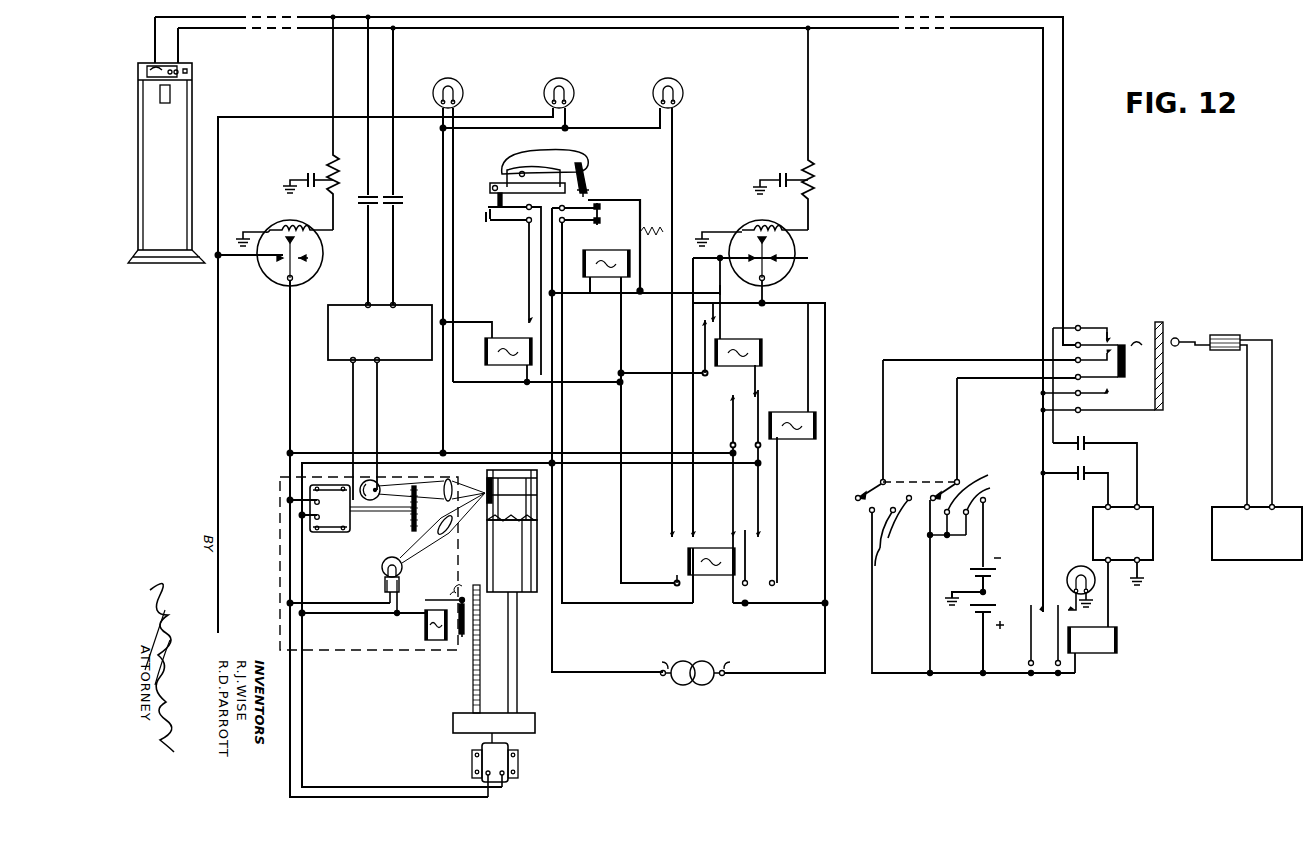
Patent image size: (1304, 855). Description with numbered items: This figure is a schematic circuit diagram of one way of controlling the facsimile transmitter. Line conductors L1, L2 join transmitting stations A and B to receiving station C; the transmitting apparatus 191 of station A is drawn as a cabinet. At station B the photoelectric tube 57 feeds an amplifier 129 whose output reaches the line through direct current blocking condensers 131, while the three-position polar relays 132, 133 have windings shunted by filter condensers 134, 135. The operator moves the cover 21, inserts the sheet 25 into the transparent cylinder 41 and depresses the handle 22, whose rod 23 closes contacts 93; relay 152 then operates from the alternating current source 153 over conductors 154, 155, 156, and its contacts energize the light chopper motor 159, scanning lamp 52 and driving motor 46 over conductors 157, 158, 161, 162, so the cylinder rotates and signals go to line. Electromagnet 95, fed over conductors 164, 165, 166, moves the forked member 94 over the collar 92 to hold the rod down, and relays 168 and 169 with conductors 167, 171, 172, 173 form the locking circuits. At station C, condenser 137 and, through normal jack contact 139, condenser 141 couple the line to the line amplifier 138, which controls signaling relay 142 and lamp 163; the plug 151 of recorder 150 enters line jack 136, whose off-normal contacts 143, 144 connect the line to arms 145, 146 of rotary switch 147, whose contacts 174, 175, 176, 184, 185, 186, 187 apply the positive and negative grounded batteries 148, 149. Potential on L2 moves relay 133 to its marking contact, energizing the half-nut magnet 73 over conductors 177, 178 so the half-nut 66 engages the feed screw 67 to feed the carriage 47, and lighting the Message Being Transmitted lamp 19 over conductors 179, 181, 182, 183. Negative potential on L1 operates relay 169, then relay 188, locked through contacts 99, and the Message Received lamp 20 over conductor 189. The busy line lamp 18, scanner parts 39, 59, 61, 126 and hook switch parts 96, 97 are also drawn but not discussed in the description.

The busy line lamp 18 is at (683, 93).
The Message Being Transmitted lamp 19 is at (574, 93).
The Message Received lamp 20 is at (463, 93).
The cover 21 is at (545, 189).
The handle 22 is at (559, 155).
The rod 23 is at (586, 177).
The subject matter bearing sheet 25 is at (500, 472).
The drum shaft 39 is at (517, 668).
The hollow transparent cylinder 41 is at (487, 552).
The driving motor 46 is at (500, 762).
The carriage 47 is at (365, 652).
The scanning lamp 52 is at (383, 577).
The photoelectric tube 57 is at (369, 502).
The disc shaft 59 is at (383, 513).
The slotted disc 61 is at (410, 522).
The half-nut 66 is at (462, 643).
The feed screw 67 is at (479, 705).
The half-nut magnet 73 is at (430, 641).
The collar 92 is at (588, 197).
The contacts 93 is at (600, 214).
The forked member 94 is at (628, 202).
The electromagnet 95 is at (610, 252).
The hook switch pivot 96 is at (490, 188).
The switch post 97 is at (490, 207).
The contacts 99 is at (488, 218).
The lens 126 is at (522, 476).
The amplifier 129 is at (399, 306).
The direct current blocking condensers 131 is at (388, 203).
The three-position polar relay 132 is at (761, 226).
The three-position polar relay 133 is at (290, 223).
The filter condenser 134 is at (780, 172).
The filter condenser 135 is at (312, 173).
The line jack 136 is at (1137, 325).
The direct current blocking condenser 137 is at (1078, 480).
The line amplifier 138 is at (1145, 512).
The normal jack contact 139 is at (1108, 342).
The direct current blocking condenser 141 is at (1088, 437).
The signaling relay 142 is at (1110, 640).
The off-normal jack contact 143 is at (1108, 387).
The off-normal jack contact 144 is at (1120, 332).
The switch arm 145 is at (953, 484).
The switch arm 146 is at (878, 482).
The manually operable rotary switch 147 is at (920, 472).
The positive grounded battery 148 is at (975, 614).
The negative grounded battery 149 is at (975, 573).
The recorder 150 is at (1278, 510).
The plug 151 is at (1224, 336).
The relay 152 is at (719, 575).
The source of alternating current potential 153 is at (688, 661).
The conductor 154 is at (778, 605).
The conductor 155 is at (562, 320).
The conductor 156 is at (552, 483).
The conductor 157 is at (715, 454).
The conductor 158 is at (302, 463).
The light chopper motor 159 is at (325, 518).
The conductor 161 is at (333, 460).
The conductor 162 is at (468, 455).
The lamp 163 is at (1070, 578).
The conductor 164 is at (825, 590).
The conductor 165 is at (710, 238).
The conductor 166 is at (621, 351).
The conductor 167 is at (742, 296).
The relay 168 is at (762, 352).
The relay 169 is at (803, 414).
The conductor 171 is at (746, 463).
The conductor 172 is at (737, 303).
The conductor 173 is at (621, 393).
The contact 174 is at (906, 517).
The contact 175 is at (978, 502).
The contact 176 is at (870, 514).
The conductor 177 is at (290, 390).
The conductor 178 is at (218, 300).
The conductor 179 is at (218, 160).
The conductor 181 is at (472, 128).
The conductor 182 is at (443, 147).
The conductor 183 is at (452, 376).
The contact 184 is at (976, 509).
The contact 185 is at (889, 563).
The contact 186 is at (986, 503).
The contact 187 is at (896, 530).
The relay 188 is at (507, 338).
The conductor 189 is at (525, 384).
The transmitting apparatus 191 is at (192, 97).
The line conductor L1 is at (841, 28).
The line conductor L2 is at (874, 26).